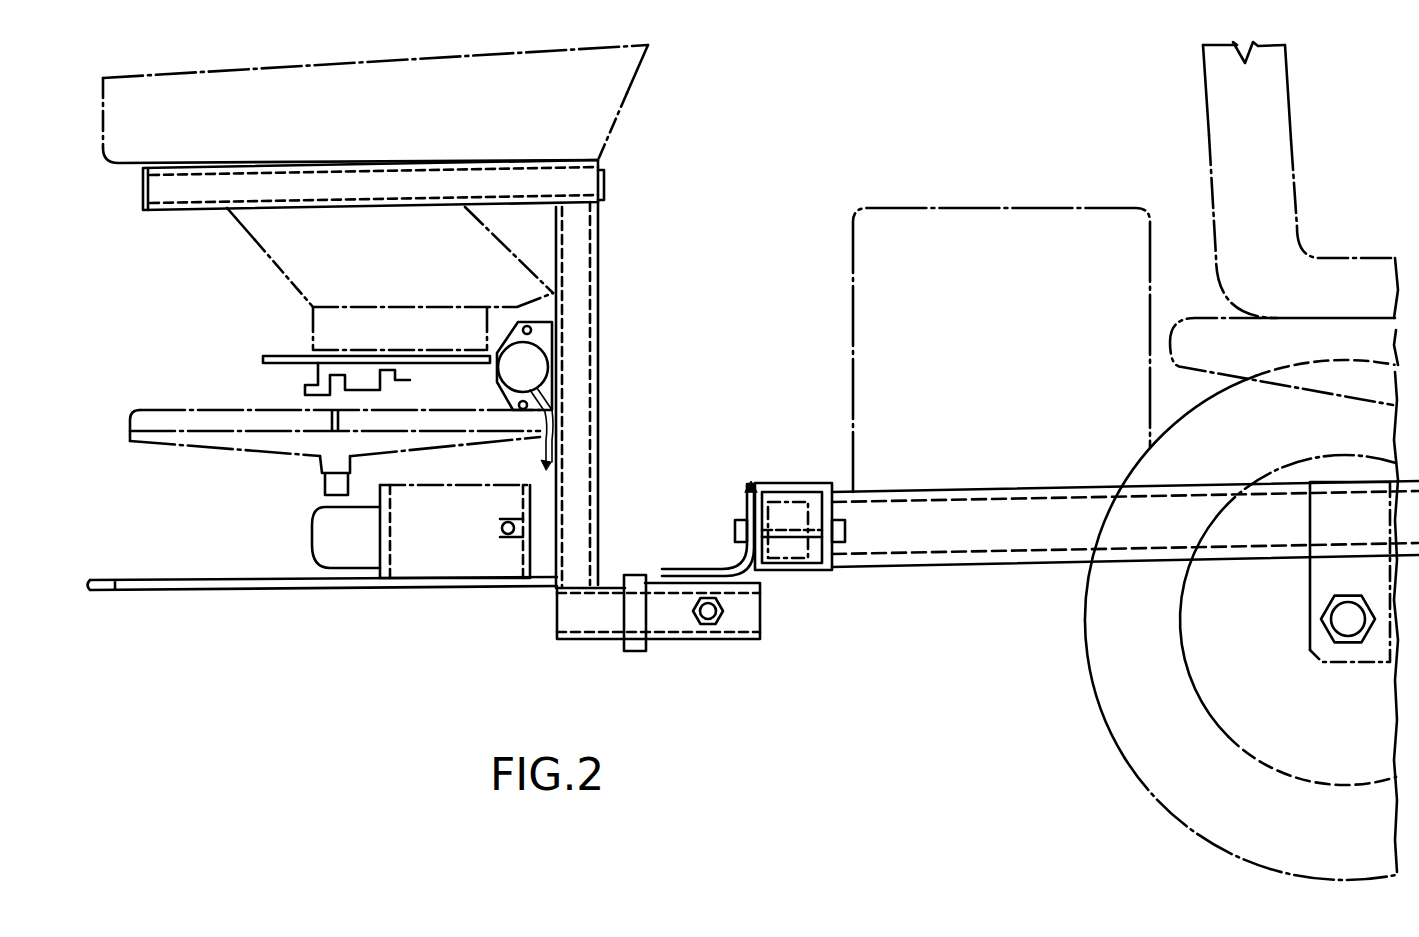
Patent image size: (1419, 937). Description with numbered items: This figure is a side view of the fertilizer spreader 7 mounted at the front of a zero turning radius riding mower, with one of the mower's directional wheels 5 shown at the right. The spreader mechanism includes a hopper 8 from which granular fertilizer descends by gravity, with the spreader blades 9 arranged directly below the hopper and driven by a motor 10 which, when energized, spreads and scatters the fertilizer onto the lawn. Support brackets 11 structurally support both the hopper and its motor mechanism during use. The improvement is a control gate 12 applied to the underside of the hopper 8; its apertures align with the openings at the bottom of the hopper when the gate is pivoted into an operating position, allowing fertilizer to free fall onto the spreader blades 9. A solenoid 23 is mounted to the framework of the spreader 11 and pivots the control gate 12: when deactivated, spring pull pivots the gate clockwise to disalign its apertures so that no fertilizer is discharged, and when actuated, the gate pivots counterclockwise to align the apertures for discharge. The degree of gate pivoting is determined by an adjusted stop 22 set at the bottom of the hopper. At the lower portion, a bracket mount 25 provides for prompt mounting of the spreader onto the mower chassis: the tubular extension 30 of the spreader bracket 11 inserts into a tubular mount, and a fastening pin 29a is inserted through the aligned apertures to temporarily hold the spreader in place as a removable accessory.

The directional wheels 5 is at (1106, 641).
The fertilizer spreader 7 is at (636, 188).
The hopper 8 is at (627, 125).
The spreader blades 9 is at (176, 410).
The motor 10 is at (457, 557).
The support brackets 11 is at (599, 350).
The control gate 12 is at (280, 356).
The adjusted stop 22 is at (488, 303).
The solenoid 23 is at (508, 372).
The bracket mount 25 is at (756, 646).
The fastening pin 29a is at (712, 624).
The tubular extension 30 is at (599, 611).